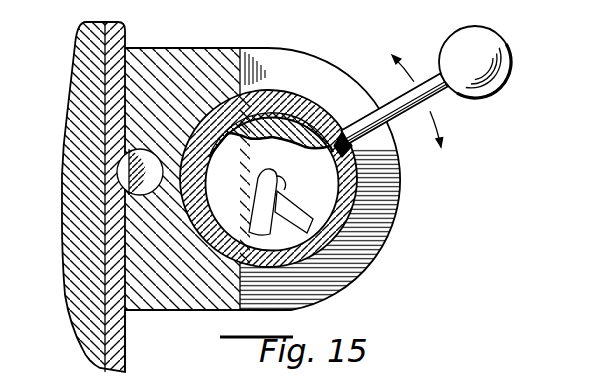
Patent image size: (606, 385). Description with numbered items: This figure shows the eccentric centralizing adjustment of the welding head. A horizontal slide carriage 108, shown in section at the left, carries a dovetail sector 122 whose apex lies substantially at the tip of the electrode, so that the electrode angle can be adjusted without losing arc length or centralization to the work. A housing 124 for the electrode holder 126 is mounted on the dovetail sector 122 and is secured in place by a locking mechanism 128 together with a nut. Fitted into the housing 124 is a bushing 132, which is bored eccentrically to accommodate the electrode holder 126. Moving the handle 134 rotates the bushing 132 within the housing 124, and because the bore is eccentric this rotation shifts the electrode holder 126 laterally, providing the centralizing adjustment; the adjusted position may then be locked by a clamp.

The horizontal slide carriage 108 is at (90, 310).
The dovetail sector 122 is at (127, 338).
The housing 124 is at (333, 297).
The electrode holder 126 is at (326, 179).
The locking mechanism 128 is at (139, 148).
The bushing 132 is at (307, 103).
The handle 134 is at (463, 98).